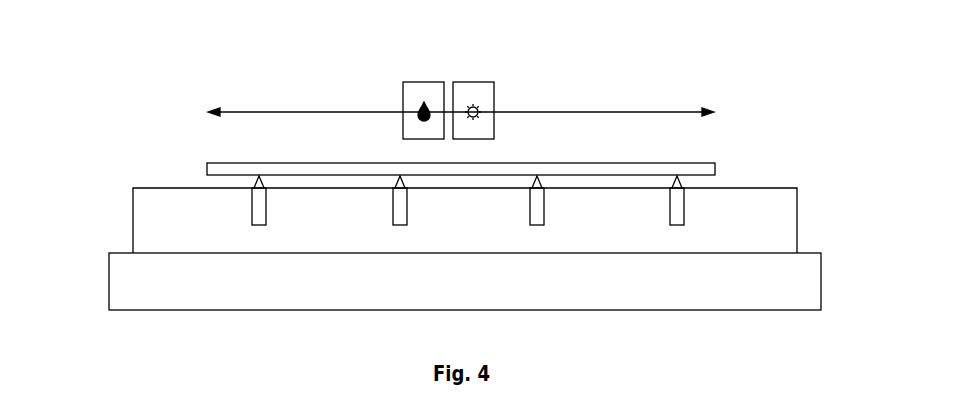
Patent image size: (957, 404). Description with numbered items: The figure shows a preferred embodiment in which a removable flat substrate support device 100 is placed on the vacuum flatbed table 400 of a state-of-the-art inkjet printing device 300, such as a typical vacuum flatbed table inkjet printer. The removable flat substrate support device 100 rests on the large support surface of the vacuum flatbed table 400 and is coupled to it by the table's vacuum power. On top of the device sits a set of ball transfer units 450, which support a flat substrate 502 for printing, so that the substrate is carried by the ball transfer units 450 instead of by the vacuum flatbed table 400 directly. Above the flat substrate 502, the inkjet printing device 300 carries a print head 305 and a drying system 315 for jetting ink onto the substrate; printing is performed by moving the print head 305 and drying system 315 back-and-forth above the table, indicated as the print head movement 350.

The removable flat substrate support device 100 is at (147, 208).
The inkjet printing device 300 is at (787, 165).
The print head 305 is at (430, 90).
The drying system 315 is at (478, 90).
The print head movement 350 is at (262, 112).
The vacuum flatbed table 400 is at (788, 293).
The ball transfer unit 450 is at (256, 196).
The flat substrate 502 is at (228, 163).